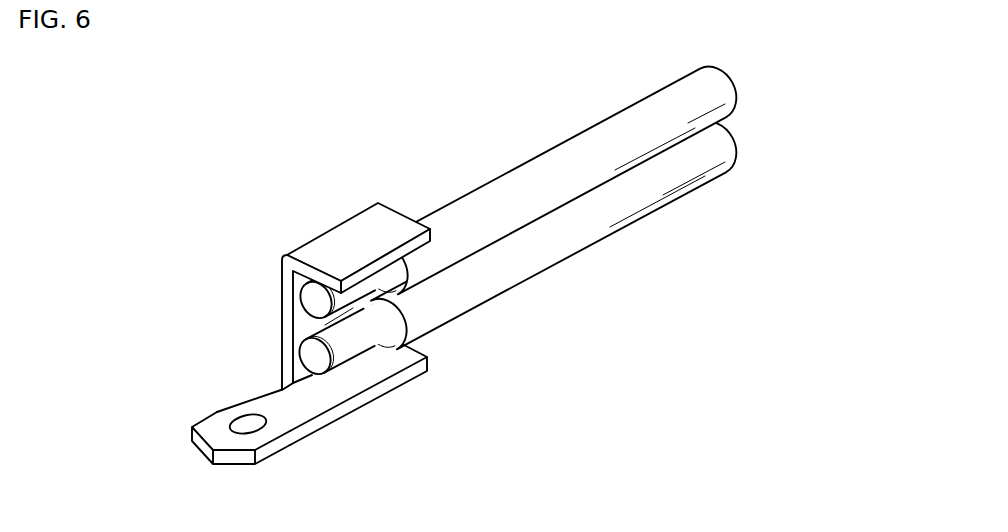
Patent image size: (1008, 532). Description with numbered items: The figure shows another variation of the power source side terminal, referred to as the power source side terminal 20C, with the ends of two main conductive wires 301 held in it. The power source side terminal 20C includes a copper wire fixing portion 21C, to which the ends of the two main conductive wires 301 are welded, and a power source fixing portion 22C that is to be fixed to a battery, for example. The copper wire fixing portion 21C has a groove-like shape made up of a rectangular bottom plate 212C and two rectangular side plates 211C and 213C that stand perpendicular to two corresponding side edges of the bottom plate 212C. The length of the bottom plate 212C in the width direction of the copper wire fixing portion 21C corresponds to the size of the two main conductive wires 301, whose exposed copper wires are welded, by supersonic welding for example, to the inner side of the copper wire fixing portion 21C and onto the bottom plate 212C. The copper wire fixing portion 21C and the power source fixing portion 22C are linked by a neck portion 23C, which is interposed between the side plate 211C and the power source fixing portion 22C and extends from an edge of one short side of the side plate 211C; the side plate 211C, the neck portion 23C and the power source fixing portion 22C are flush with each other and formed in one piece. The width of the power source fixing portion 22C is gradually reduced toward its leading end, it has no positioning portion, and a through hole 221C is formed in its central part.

The power source side terminal 20C is at (331, 331).
The copper wire fixing portion 21C is at (353, 296).
The side plate 211C is at (357, 383).
The bottom plate 212C is at (298, 318).
The side plate 213C is at (388, 217).
The power source fixing portion 22C is at (205, 448).
The through hole 221C is at (238, 423).
The neck portion 23C is at (276, 386).
The main conductive wire 301 is at (593, 127).